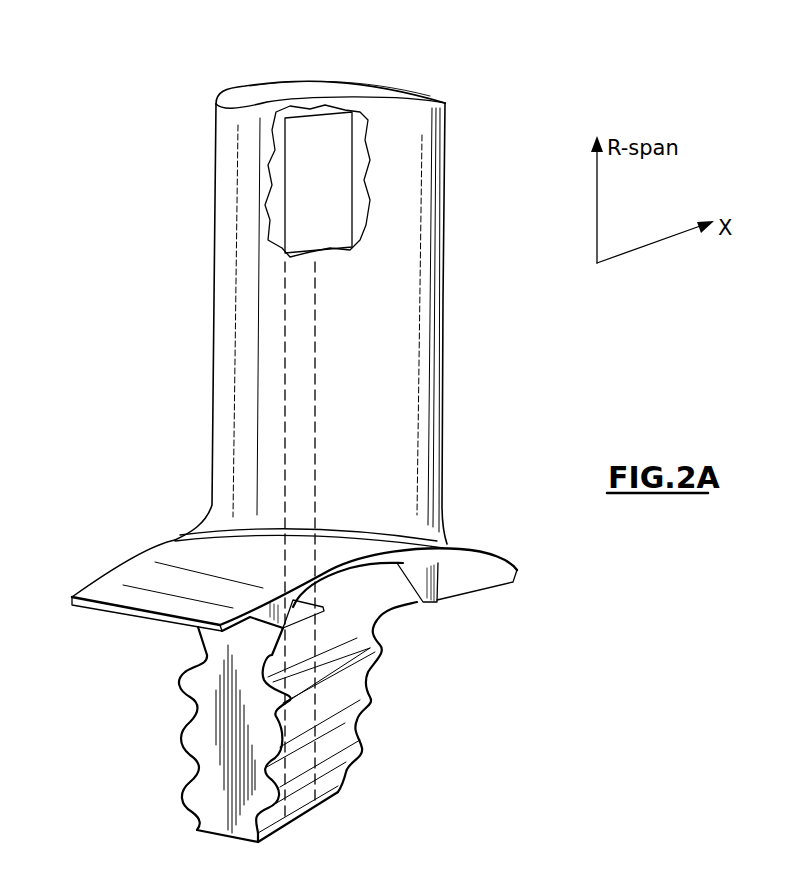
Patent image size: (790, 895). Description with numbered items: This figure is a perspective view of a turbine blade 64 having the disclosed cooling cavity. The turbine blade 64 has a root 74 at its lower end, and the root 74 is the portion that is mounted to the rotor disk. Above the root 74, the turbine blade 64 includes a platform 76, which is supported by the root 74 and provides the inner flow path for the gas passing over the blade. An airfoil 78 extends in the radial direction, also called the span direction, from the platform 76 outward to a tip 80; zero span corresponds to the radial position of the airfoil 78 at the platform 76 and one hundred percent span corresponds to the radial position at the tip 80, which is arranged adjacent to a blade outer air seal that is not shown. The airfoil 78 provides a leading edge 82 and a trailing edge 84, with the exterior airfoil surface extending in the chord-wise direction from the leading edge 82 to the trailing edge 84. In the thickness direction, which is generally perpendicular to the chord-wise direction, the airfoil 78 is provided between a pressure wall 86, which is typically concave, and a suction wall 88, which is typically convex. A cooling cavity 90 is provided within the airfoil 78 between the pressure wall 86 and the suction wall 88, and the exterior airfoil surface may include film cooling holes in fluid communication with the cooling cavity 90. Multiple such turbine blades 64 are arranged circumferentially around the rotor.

The turbine blade 64 is at (174, 266).
The root 74 is at (222, 737).
The platform 76 is at (335, 545).
The airfoil 78 is at (388, 417).
The tip 80 is at (237, 88).
The leading edge 82 is at (213, 268).
The trailing edge 84 is at (445, 258).
The pressure wall 86 is at (357, 322).
The suction wall 88 is at (366, 70).
The cooling cavity 90 is at (366, 188).